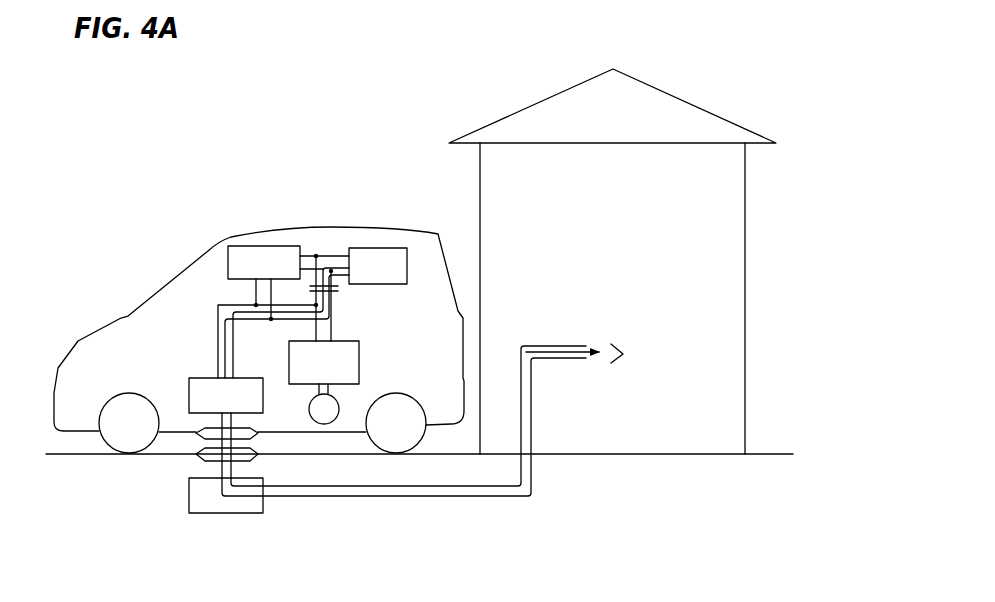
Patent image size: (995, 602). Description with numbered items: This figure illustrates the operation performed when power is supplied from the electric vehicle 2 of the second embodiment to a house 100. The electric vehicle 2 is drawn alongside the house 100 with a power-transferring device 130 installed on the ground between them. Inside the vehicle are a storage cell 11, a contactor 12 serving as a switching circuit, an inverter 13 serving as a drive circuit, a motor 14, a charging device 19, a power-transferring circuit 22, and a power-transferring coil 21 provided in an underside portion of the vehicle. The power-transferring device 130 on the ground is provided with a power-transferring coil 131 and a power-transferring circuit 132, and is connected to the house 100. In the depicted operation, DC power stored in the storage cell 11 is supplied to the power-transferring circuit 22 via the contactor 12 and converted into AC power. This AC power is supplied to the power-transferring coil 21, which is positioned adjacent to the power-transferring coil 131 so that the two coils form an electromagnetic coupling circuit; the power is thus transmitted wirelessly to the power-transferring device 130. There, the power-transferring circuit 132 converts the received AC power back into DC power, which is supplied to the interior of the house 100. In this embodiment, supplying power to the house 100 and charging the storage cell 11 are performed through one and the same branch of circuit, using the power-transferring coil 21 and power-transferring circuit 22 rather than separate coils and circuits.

The electric vehicle 2 is at (340, 226).
The storage cell 11 is at (382, 246).
The contactor 12 is at (346, 293).
The inverter 13 is at (359, 363).
The motor 14 is at (309, 404).
The charging device 19 is at (247, 244).
The power-transferring coil 21 is at (197, 428).
The power-transferring circuit 22 is at (197, 377).
The house 100 is at (658, 91).
The power-transferring device 130 is at (361, 457).
The power-transferring coil 131 is at (195, 460).
The power-transferring circuit 132 is at (232, 513).